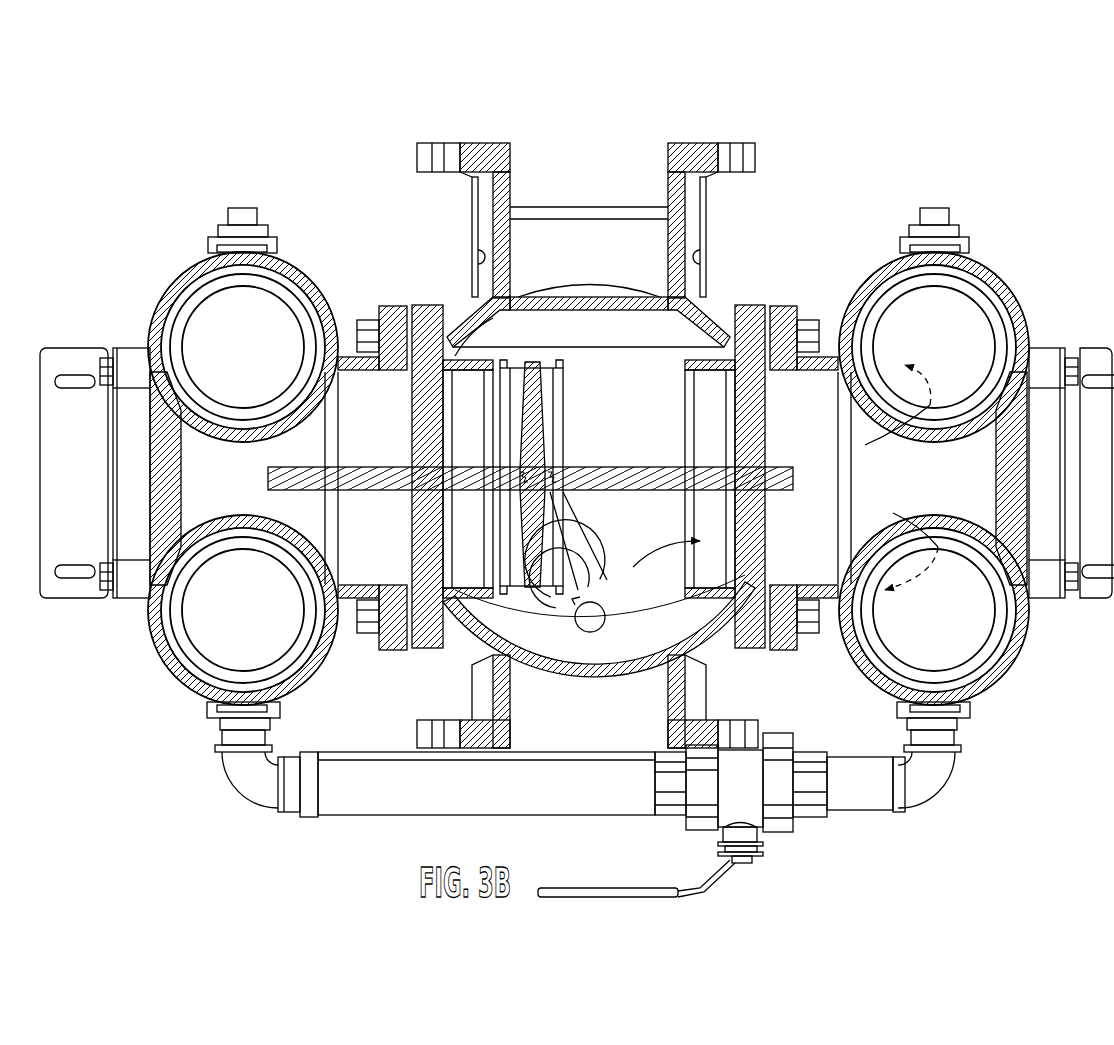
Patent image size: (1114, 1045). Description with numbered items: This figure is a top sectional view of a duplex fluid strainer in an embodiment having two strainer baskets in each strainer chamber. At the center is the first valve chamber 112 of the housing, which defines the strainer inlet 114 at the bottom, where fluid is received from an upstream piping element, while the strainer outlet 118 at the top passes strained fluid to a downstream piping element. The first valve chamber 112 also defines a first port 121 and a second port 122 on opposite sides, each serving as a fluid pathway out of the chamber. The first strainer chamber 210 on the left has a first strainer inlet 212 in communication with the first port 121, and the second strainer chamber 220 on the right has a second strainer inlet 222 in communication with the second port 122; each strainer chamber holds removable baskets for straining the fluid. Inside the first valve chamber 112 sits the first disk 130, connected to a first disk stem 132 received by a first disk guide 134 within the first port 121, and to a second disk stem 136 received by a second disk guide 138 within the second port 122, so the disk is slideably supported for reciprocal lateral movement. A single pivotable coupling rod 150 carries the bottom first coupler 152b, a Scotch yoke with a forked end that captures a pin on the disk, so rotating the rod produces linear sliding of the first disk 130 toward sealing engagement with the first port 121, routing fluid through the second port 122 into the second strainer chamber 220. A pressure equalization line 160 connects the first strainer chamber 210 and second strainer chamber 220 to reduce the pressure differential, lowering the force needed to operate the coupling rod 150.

The strainer outlet 118 is at (588, 168).
The strainer inlet 114 is at (577, 724).
The first valve chamber 112 is at (687, 615).
The first disk 130 is at (478, 330).
The first port 121 is at (394, 304).
The second port 122 is at (708, 423).
The first disk guide 134 is at (420, 440).
The second disk guide 138 is at (763, 453).
The second disk stem 136 is at (803, 587).
The first disk stem 132 is at (282, 487).
The coupling rod 150 is at (588, 625).
The bottom first coupler 152b is at (552, 597).
The pressure equalization line 160 is at (797, 830).
The first strainer chamber 210 is at (178, 278).
The first strainer inlet 212 is at (377, 307).
The second strainer chamber 220 is at (1000, 292).
The second strainer inlet 222 is at (792, 304).